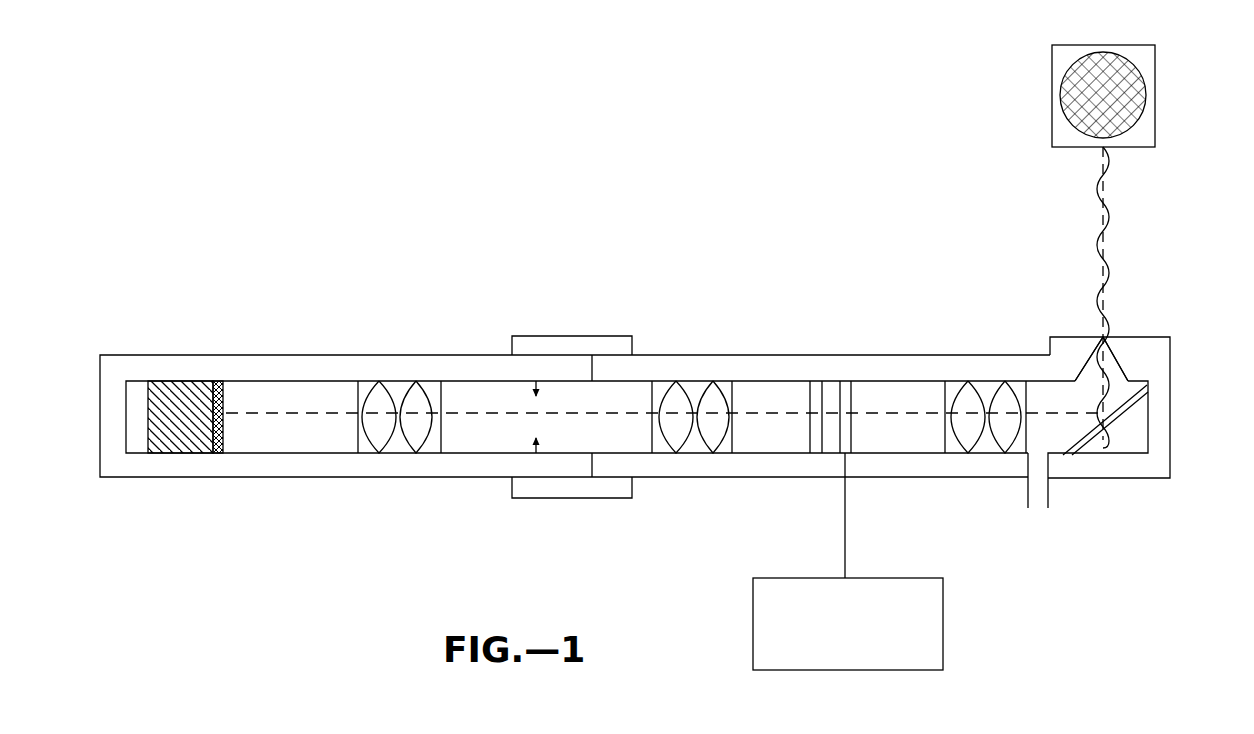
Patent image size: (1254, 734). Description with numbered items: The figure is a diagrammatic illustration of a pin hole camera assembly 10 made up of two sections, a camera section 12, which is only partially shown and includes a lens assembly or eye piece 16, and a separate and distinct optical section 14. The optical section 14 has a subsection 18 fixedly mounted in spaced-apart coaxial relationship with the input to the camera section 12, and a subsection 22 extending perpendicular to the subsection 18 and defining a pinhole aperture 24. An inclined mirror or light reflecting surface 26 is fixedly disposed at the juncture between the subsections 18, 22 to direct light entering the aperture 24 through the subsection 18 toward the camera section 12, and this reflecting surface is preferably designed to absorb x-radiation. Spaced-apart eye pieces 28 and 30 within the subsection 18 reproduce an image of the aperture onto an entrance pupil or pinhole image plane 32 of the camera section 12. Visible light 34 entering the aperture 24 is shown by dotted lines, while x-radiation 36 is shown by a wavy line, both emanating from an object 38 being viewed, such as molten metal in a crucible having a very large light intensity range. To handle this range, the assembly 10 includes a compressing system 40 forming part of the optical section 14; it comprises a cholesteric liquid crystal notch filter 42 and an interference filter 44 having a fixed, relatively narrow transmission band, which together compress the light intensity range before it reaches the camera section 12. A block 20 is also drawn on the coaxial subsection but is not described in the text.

The pin hole camera assembly 10 is at (663, 138).
The camera section 12 is at (207, 346).
The optical section 14 is at (827, 340).
The lens assembly or eye piece 16 is at (396, 445).
The subsection 18 is at (785, 462).
The coupling block 20 is at (596, 345).
The subsection 22 is at (1155, 355).
The pinhole aperture 24 is at (1108, 332).
The light reflecting surface 26 is at (1072, 435).
The eye piece 28 is at (955, 447).
The eye piece 30 is at (690, 445).
The entrance pupil image plane 32 is at (540, 428).
The visible light 34 is at (1100, 165).
The x-radiation 36 is at (1097, 218).
The object 38 is at (1052, 80).
The light intensity compressing system 40 is at (863, 458).
The cholesteric liquid crystal notch filter 42 is at (851, 385).
The interference filter 44 is at (810, 383).